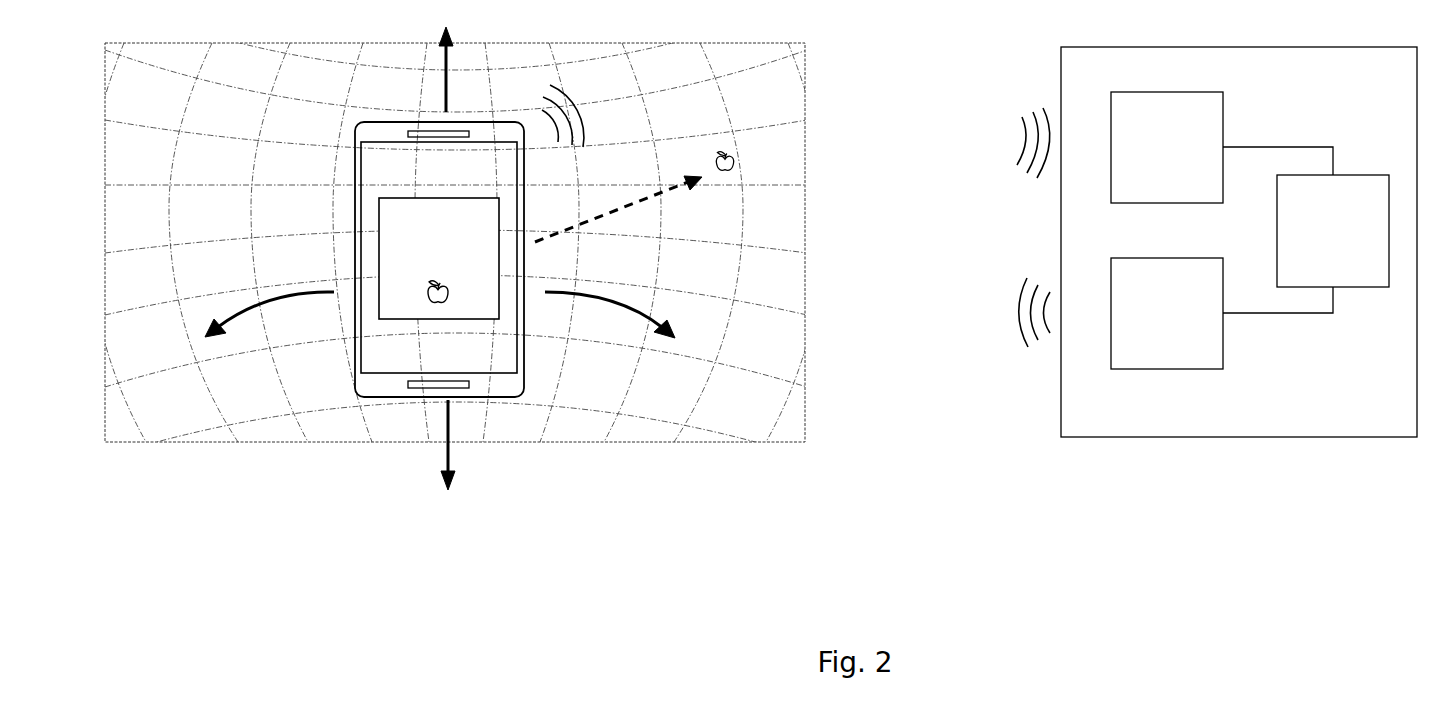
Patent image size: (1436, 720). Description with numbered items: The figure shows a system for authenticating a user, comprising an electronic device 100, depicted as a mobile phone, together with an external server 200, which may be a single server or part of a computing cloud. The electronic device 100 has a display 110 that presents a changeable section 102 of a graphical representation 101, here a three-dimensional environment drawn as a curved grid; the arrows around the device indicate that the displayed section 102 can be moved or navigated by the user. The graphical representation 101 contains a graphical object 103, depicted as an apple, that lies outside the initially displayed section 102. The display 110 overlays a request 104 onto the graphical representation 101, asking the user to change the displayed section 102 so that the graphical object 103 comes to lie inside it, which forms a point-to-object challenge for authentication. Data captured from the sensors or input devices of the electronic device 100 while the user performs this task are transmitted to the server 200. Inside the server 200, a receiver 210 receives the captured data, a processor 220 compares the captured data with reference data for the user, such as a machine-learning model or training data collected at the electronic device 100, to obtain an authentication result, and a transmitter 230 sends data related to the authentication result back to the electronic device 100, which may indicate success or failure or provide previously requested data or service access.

The electronic device 100 is at (430, 275).
The graphical representation 101 is at (636, 46).
The changeable section 102 is at (512, 177).
The graphical object 103 is at (734, 157).
The request 104 is at (440, 198).
The display 110 is at (396, 277).
The server 200 is at (1217, 268).
The receiver 210 is at (1167, 147).
The processor 220 is at (1333, 231).
The transmitter 230 is at (1167, 313).